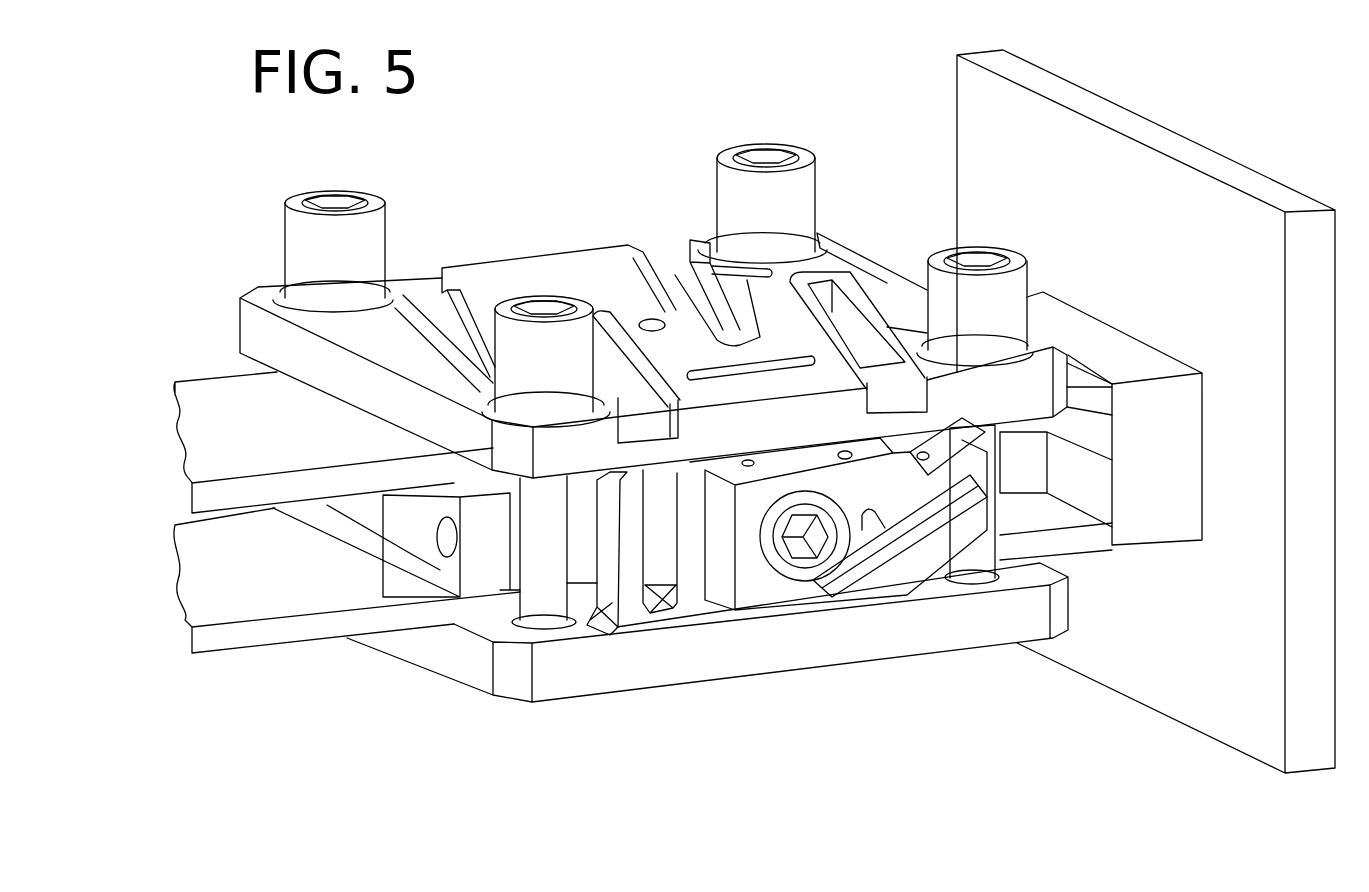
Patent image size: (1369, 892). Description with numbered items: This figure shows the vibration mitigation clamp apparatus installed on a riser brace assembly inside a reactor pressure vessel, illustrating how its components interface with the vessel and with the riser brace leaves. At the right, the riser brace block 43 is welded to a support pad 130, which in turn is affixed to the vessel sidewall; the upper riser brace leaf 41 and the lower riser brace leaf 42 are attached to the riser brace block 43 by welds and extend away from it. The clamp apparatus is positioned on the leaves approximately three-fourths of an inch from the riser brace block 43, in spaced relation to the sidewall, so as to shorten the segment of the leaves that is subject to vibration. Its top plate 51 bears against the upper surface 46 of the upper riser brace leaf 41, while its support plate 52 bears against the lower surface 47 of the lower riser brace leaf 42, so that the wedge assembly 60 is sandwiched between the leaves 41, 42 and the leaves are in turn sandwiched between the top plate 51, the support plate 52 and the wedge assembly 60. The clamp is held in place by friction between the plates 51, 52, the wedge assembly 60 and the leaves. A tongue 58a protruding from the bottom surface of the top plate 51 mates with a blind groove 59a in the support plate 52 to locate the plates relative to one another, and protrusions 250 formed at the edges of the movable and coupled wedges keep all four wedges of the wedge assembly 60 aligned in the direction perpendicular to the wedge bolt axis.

The support pad 130 is at (955, 92).
The top plate 51 is at (483, 262).
The upper surface 46 is at (1076, 381).
The riser brace block 43 is at (1162, 548).
The lower surface 47 is at (1093, 556).
The upper riser brace leaf 41 is at (257, 497).
The lower riser brace leaf 42 is at (267, 640).
The protrusions 250 is at (420, 566).
The support plate 52 is at (1000, 650).
The blind groove 59a is at (588, 628).
The tongue 58a is at (673, 608).
The wedge assembly 60 is at (770, 588).